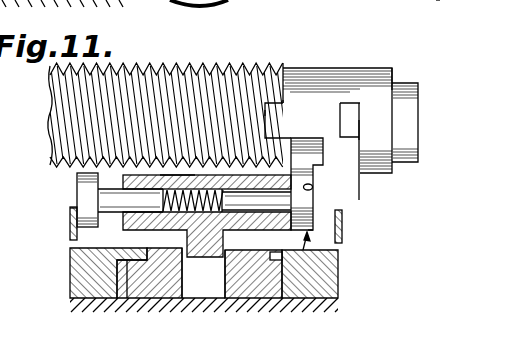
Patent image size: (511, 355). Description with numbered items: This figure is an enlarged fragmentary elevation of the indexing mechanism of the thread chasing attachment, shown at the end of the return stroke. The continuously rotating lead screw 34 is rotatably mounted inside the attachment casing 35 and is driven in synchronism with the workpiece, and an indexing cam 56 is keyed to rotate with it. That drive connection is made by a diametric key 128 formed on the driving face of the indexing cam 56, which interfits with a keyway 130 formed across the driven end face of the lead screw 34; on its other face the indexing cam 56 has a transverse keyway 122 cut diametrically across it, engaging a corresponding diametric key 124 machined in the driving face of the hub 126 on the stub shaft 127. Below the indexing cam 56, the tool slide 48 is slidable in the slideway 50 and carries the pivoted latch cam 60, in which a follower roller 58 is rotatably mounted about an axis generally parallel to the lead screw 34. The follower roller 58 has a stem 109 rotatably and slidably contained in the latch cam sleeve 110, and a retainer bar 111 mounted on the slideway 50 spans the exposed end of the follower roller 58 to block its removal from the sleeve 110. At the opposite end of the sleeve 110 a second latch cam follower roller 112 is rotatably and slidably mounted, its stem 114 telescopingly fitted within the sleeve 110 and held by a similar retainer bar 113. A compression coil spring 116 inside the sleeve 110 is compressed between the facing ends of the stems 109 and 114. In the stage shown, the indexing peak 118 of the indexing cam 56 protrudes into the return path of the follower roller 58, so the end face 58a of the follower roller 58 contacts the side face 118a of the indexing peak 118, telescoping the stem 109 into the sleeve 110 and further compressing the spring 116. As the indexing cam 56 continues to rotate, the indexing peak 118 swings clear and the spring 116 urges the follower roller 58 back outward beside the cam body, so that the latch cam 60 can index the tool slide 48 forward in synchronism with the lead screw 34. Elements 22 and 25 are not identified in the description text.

The thread portion (adjacent figure) 22 is at (127, 0).
The member (adjacent figure) 25 is at (205, 0).
The attachment casing 35 is at (441, 0).
The lead screw 34 is at (143, 66).
The latch cam 60 is at (178, 170).
The keyway 130 is at (284, 108).
The diametric key 128 is at (270, 114).
The indexing cam 56 is at (325, 66).
The transverse keyway 122 is at (336, 104).
The diametric key 124 is at (359, 137).
The hub 126 is at (393, 69).
The stub shaft 127 is at (412, 102).
The latch cam sleeve 110 is at (78, 221).
The second latch cam follower roller 112 is at (77, 177).
The retainer bar 113 is at (70, 210).
The stem 114 is at (72, 218).
The compression coil spring 116 is at (178, 226).
The stem 109 is at (248, 204).
The indexing peak 118 is at (313, 198).
The side face 118a is at (313, 189).
The end face 58a is at (315, 220).
The retainer bar 111 is at (343, 233).
The follower roller 58 is at (340, 263).
The slideway 50 is at (70, 266).
The tool slide 48 is at (237, 285).